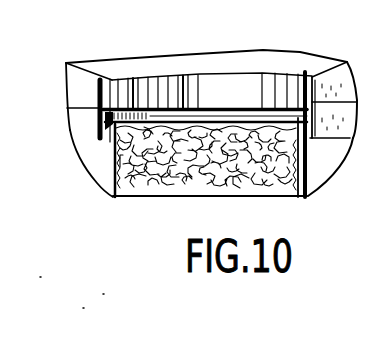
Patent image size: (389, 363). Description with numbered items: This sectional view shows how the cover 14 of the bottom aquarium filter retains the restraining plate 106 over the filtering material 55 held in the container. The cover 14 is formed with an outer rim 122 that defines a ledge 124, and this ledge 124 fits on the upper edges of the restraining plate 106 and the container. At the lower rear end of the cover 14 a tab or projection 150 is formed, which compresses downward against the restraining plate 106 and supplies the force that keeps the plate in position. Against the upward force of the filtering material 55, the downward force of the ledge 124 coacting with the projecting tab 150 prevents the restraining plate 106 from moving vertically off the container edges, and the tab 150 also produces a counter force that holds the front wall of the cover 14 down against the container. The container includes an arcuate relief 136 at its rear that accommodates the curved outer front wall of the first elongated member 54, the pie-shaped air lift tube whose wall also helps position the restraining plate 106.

The cover 14 is at (347, 62).
The outer rim 122 is at (343, 110).
The ledge 124 is at (315, 77).
The arcuate relief 136 is at (163, 90).
The tab or projection 150 is at (208, 113).
The restraining plate 106 is at (150, 130).
The filtering material 55 is at (229, 170).
The first elongated member 54 is at (310, 173).